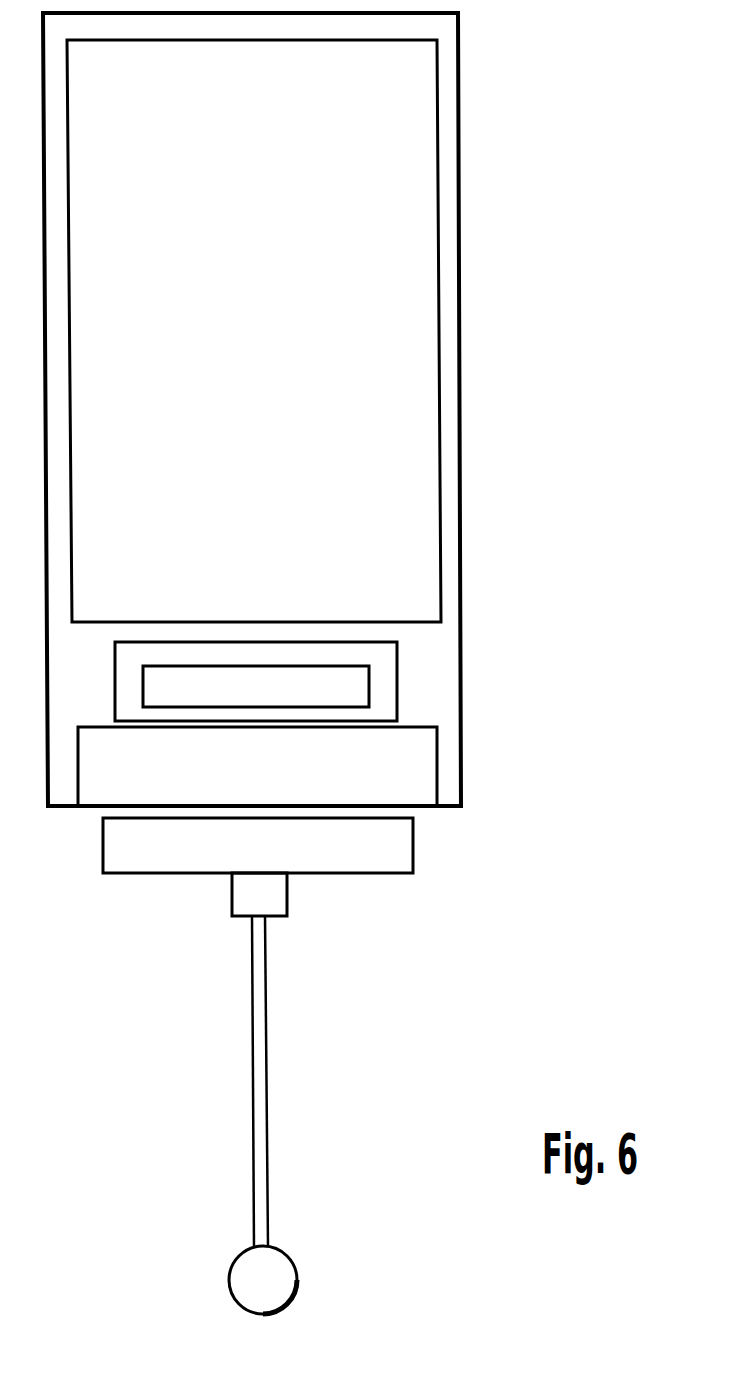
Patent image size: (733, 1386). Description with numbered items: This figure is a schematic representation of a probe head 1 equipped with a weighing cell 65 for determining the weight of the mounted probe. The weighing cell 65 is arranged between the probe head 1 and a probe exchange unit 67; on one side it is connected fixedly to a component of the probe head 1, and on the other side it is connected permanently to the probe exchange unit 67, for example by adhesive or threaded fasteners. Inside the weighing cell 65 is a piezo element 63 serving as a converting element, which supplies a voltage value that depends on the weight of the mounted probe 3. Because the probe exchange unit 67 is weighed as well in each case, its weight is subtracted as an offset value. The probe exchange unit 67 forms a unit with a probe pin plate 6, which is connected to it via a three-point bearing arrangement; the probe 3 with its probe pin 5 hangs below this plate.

The probe head 1 is at (415, 220).
The weighing cell 65 is at (405, 669).
The piezo element 63 is at (358, 697).
The probe exchange unit 67 is at (445, 763).
The probe pin plate 6 is at (413, 853).
The probe 3 is at (292, 1035).
The probe pin 5 is at (278, 1270).